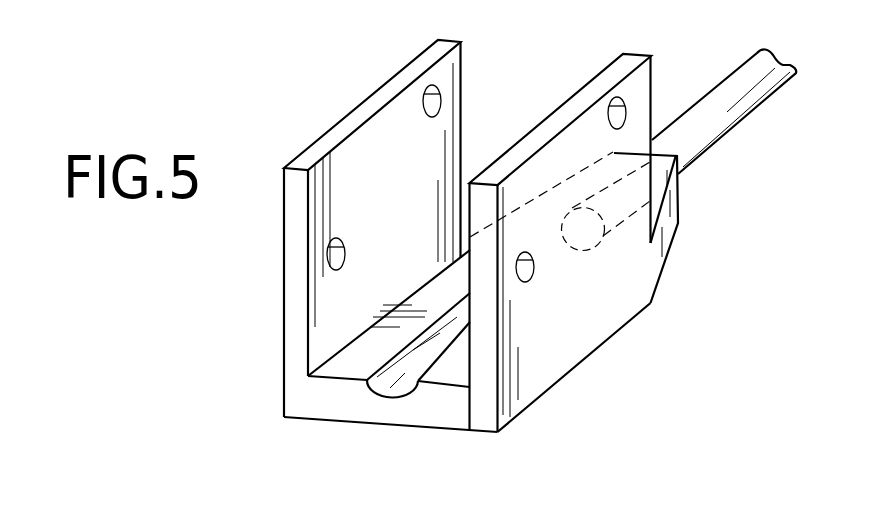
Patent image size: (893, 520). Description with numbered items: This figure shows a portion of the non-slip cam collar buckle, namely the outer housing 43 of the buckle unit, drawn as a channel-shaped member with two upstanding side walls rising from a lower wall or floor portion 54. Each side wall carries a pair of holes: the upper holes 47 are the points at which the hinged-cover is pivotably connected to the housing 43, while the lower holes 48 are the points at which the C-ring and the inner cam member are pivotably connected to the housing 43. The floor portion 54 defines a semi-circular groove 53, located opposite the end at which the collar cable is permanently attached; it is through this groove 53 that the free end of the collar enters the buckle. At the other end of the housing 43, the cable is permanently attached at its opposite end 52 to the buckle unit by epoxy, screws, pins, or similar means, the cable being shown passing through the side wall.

The outer housing 43 is at (627, 283).
The holes 47 is at (428, 92).
The holes 48 is at (328, 259).
The opposite end of cable 52 is at (678, 152).
The semi-circular groove 53 is at (392, 398).
The lower wall or floor portion 54 is at (437, 408).